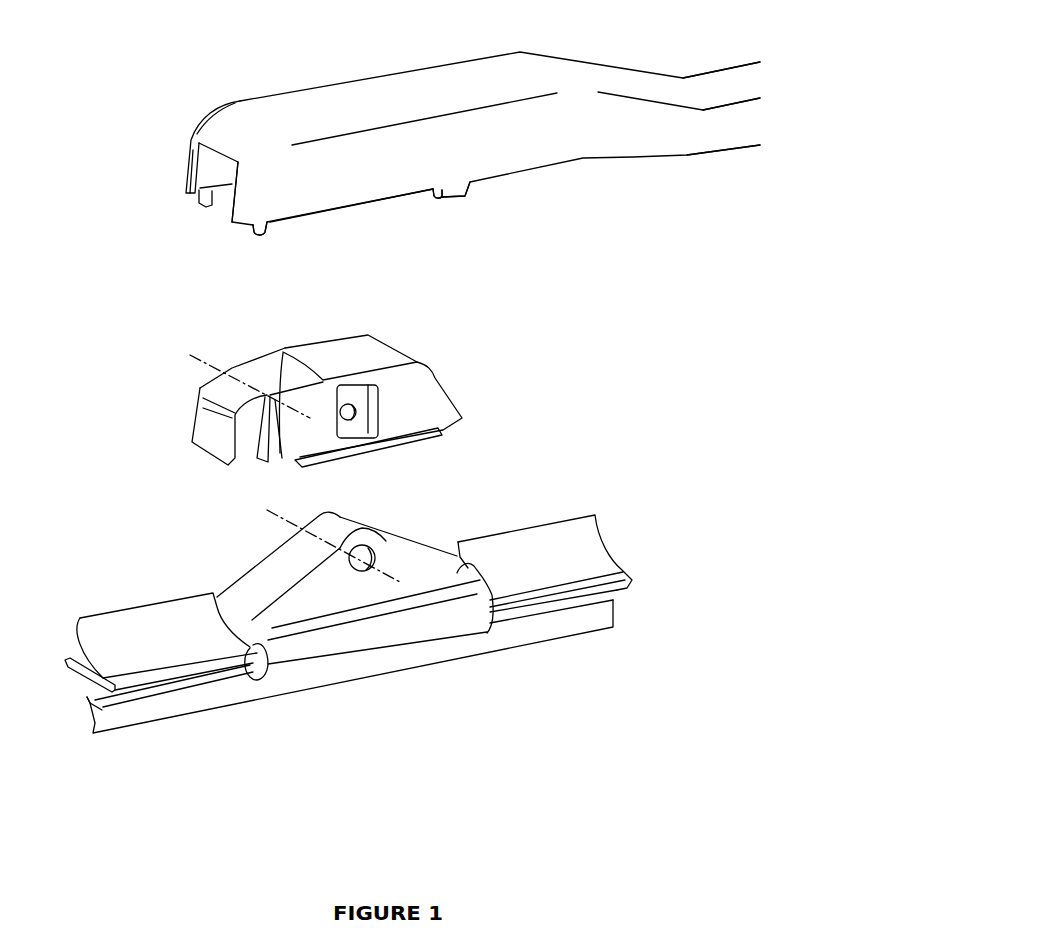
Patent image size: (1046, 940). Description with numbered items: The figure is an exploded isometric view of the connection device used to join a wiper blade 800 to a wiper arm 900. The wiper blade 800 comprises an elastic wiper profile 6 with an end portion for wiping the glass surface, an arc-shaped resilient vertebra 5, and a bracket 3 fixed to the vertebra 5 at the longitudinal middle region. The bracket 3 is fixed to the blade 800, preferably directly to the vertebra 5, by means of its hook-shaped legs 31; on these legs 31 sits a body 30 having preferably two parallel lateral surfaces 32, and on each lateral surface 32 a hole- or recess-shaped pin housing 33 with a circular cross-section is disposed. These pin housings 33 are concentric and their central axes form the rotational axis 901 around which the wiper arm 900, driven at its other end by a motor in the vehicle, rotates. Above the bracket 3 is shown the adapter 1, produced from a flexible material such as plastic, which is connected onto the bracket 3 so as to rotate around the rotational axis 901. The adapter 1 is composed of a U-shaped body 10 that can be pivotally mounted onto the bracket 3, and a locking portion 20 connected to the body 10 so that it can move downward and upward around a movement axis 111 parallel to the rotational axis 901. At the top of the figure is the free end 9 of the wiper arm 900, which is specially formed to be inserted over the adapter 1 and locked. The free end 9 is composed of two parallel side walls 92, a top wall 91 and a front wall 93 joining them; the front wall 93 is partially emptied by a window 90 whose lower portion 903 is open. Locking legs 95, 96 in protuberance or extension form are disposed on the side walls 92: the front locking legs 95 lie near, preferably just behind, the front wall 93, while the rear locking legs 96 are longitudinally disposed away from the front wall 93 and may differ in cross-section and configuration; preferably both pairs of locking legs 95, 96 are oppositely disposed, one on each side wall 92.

The adapter 1 is at (138, 352).
The bracket 3 is at (227, 572).
The vertebra 5 is at (98, 690).
The wiper profile 6 is at (90, 720).
The free end 9 is at (317, 78).
The body 10 is at (310, 342).
The locking portion 20 is at (183, 413).
The body 30 is at (340, 603).
The hook-shaped legs 31 is at (270, 665).
The lateral surfaces 32 is at (447, 577).
The pin housing 33 is at (373, 563).
The window 90 is at (207, 178).
The top wall 91 is at (421, 104).
The side walls 92 is at (421, 164).
The front wall 93 is at (212, 142).
The front locking legs 95 is at (197, 203).
The rear locking legs 96 is at (464, 199).
The movement axis 111 is at (207, 362).
The wiper blade 800 is at (558, 477).
The wiper arm 900 is at (625, 187).
The rotational axis 901 is at (290, 523).
The lower portion 903 is at (220, 212).